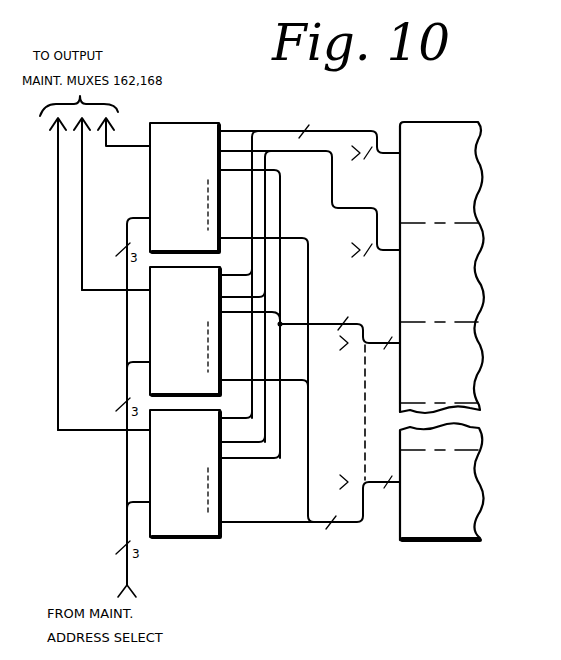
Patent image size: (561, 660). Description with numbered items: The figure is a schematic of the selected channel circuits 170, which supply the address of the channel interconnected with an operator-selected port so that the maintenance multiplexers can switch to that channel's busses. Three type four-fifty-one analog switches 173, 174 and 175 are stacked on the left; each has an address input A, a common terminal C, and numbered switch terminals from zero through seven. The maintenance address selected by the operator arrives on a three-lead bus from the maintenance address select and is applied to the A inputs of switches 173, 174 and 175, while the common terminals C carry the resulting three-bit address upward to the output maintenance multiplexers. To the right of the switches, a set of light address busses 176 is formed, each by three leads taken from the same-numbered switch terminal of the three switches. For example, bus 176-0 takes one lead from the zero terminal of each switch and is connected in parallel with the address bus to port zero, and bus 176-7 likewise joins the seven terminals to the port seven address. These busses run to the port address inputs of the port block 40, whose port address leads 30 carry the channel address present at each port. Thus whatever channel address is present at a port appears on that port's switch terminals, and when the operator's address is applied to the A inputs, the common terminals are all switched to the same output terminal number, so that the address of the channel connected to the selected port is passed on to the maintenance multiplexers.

The selected channel circuits 170 is at (183, 377).
The analog switch 175 is at (149, 167).
The analog switch 174 is at (150, 318).
The analog switch 173 is at (152, 462).
The light address busses 176 is at (309, 324).
The light address bus for port 0 176-0 is at (357, 130).
The light address bus for port 7 176-7 is at (272, 525).
The lead 30 is at (378, 511).
The port address block 40 is at (498, 278).